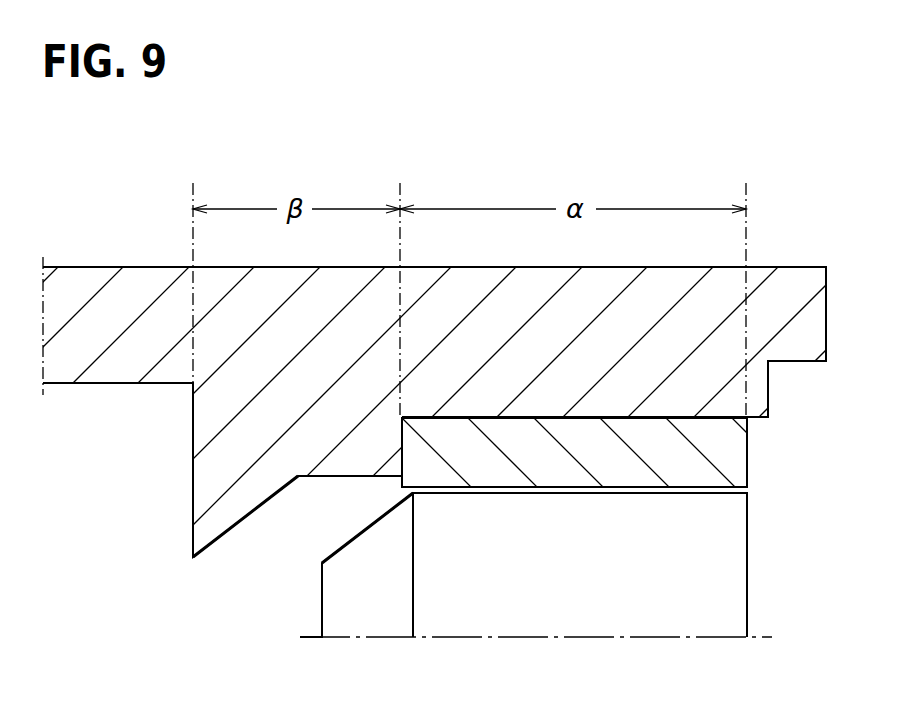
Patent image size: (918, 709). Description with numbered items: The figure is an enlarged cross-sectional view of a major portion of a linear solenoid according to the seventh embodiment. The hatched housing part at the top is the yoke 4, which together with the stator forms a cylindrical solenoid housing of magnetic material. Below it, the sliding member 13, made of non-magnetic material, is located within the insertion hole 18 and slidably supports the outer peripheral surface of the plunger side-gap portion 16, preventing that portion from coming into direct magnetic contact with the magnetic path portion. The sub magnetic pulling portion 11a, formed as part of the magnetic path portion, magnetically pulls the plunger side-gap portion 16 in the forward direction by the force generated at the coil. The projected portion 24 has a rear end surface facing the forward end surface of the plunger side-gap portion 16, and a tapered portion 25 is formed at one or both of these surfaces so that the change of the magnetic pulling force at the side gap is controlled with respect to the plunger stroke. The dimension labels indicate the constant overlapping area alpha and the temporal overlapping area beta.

The yoke 4 is at (118, 292).
The projected portion 24 is at (232, 507).
The tapered portion 25 is at (257, 512).
The sub magnetic pulling portion 11a is at (393, 495).
The sliding member 13 is at (720, 455).
The insertion hole 18 is at (650, 418).
The plunger side-gap portion 16 is at (695, 565).